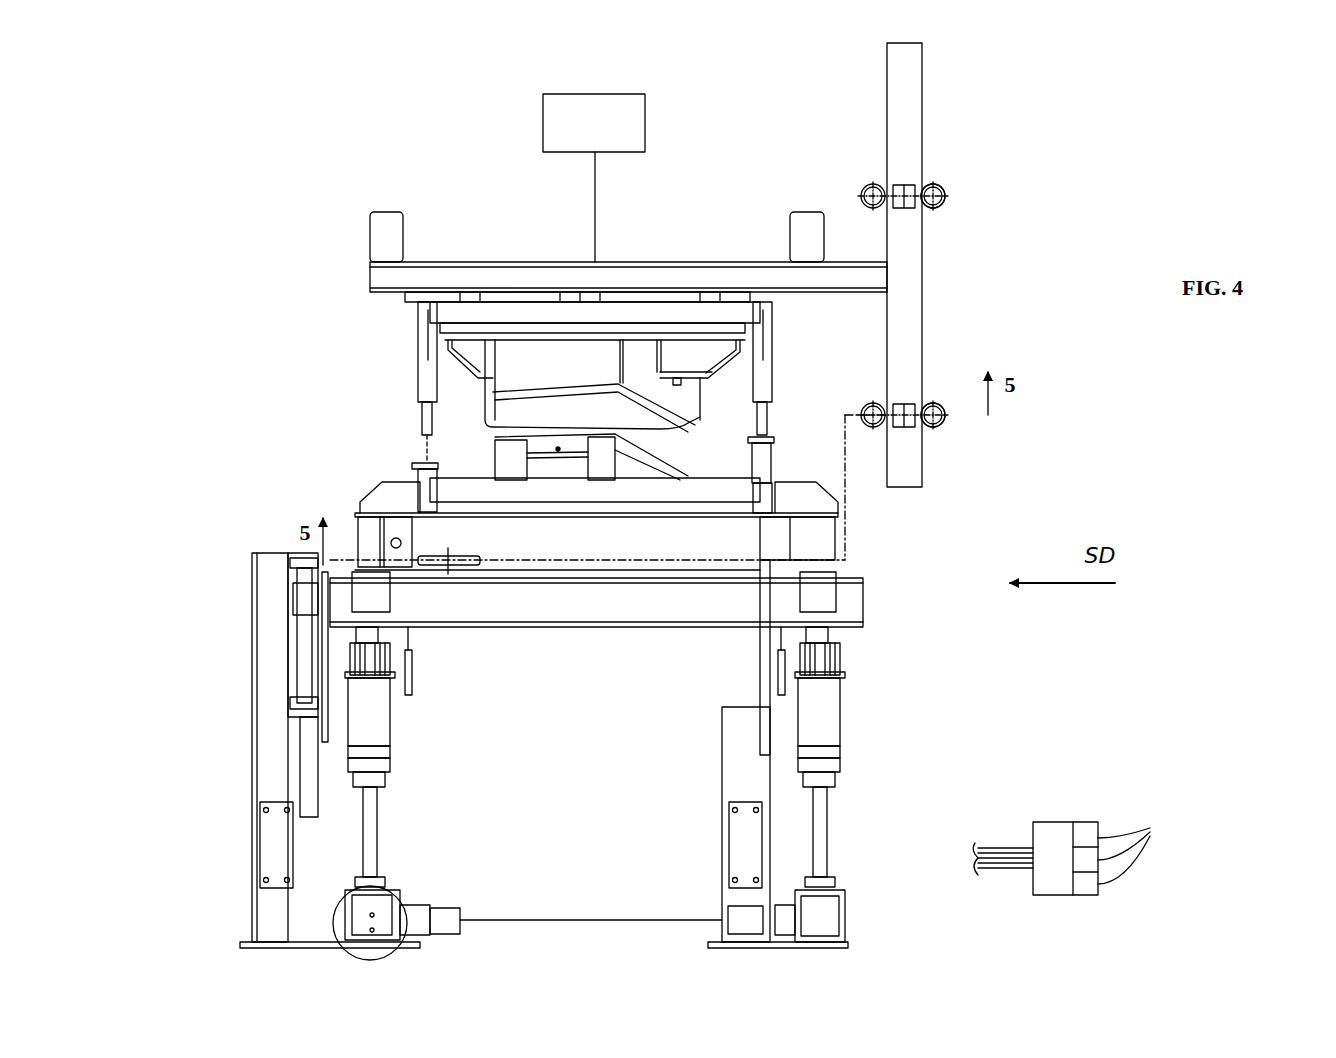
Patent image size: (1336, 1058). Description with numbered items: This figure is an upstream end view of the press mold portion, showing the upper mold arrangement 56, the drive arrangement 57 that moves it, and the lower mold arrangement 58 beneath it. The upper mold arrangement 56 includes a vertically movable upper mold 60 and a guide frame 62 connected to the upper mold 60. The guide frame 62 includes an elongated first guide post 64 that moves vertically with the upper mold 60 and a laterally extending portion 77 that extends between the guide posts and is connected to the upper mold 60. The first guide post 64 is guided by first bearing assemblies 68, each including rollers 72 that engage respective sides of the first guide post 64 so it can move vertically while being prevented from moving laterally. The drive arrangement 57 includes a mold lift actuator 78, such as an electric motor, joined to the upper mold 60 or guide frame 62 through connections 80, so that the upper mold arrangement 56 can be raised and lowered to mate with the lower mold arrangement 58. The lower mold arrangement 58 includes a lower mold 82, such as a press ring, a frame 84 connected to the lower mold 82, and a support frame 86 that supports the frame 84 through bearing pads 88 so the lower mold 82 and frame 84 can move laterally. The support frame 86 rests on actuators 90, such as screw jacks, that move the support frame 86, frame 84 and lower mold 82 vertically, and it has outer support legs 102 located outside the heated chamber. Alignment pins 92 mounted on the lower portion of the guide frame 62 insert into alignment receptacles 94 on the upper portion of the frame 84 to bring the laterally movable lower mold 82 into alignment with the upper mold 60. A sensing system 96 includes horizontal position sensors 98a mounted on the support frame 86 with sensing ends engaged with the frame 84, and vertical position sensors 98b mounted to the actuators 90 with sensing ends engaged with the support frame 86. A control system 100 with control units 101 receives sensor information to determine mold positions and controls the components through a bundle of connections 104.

The upper mold arrangement 56 is at (362, 351).
The drive arrangement 57 is at (530, 118).
The lower mold arrangement 58 is at (325, 468).
The upper mold 60 is at (660, 428).
The guide frame 62 is at (368, 298).
The first guide post 64 is at (922, 110).
The first bearing assembly 68 is at (945, 215).
The roller 72 is at (943, 185).
The laterally extending portion 77 is at (808, 296).
The mold lift actuator 78 is at (645, 125).
The connections 80 is at (596, 230).
The lower mold 82 is at (680, 460).
The frame 84 is at (358, 530).
The support frame 86 is at (867, 603).
The bearing pads 88 is at (838, 568).
The actuator 90 is at (855, 730).
The alignment pin 92 is at (420, 415).
The alignment receptacle 94 is at (430, 462).
The sensing system 96 is at (500, 577).
The horizontal position sensor 98a is at (470, 556).
The vertical position sensor 98b is at (412, 663).
The control system 100 is at (1100, 785).
The control unit 101 is at (1147, 852).
The outer support legs 102 is at (253, 760).
The bundle of connections 104 is at (1022, 848).